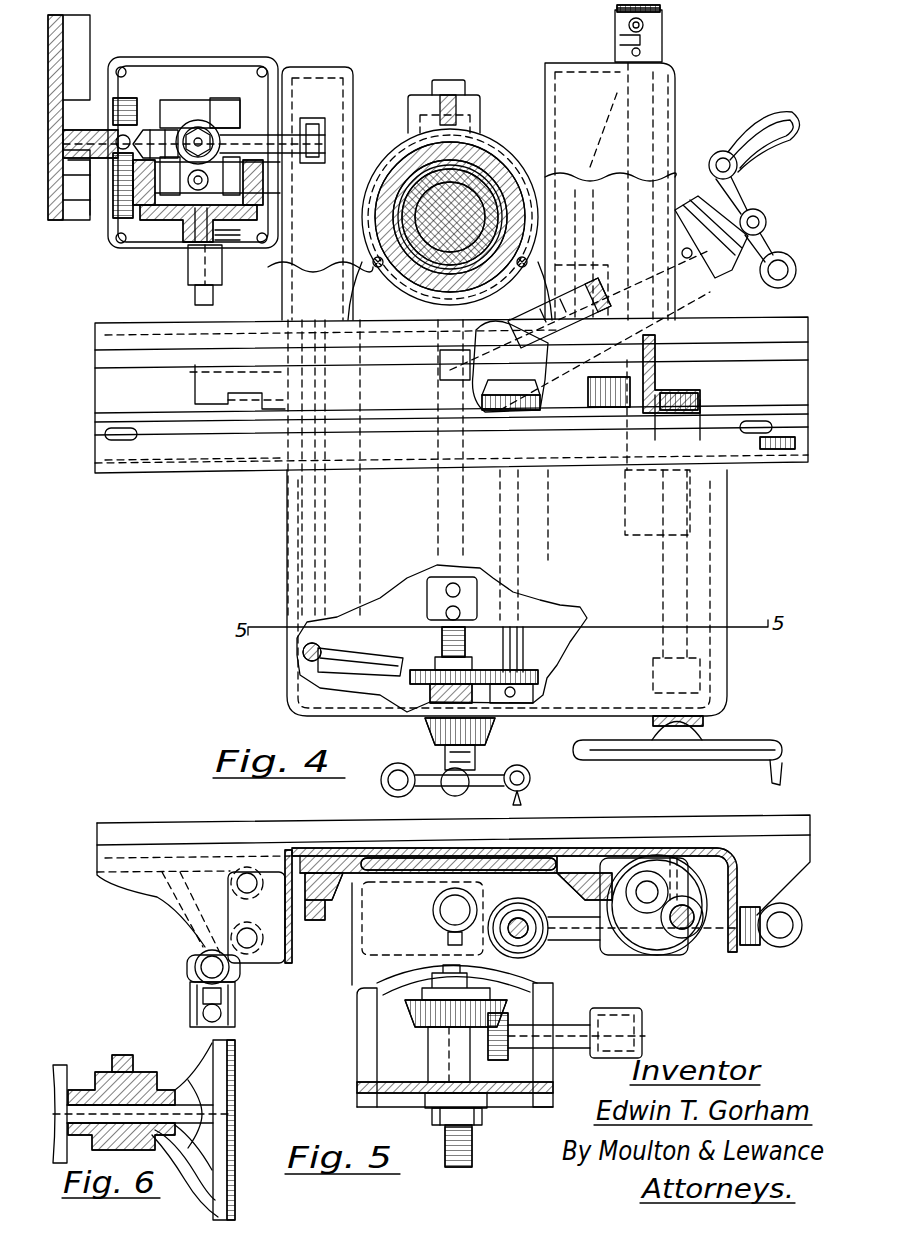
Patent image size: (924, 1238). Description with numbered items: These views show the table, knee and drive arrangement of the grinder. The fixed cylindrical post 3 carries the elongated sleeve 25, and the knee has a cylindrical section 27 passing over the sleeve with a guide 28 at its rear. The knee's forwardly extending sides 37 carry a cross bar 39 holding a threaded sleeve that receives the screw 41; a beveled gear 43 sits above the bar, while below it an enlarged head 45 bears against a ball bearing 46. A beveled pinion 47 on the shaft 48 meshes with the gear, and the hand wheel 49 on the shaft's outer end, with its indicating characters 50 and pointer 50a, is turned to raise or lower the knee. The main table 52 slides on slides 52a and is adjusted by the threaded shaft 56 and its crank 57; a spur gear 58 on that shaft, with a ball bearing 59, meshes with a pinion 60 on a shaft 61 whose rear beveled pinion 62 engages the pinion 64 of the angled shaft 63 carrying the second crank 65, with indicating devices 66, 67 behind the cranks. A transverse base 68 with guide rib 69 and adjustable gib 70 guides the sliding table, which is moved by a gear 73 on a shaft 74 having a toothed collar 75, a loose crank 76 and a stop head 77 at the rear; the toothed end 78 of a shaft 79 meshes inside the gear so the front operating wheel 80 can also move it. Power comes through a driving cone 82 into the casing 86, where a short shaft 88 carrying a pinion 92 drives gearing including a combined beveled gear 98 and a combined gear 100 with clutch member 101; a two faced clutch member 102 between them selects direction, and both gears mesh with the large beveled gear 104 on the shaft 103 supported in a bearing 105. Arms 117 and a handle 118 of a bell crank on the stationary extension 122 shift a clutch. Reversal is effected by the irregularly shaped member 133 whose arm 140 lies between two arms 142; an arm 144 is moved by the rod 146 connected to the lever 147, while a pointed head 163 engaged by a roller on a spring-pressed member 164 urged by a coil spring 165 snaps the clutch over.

In FIG. 4, the cylindrical standard or post 3 is at (420, 185).
In FIG. 4, the elongated cylindrical sleeve 25 is at (478, 157).
In FIG. 4, the cylindrical section of knee 27 is at (510, 160).
In FIG. 4, the guide 28 is at (475, 104).
In FIG. 5, the sides of knee 37 is at (360, 1015).
In FIG. 5, the cross bar 39 is at (445, 1058).
In FIG. 5, the screw 41 is at (473, 1160).
In FIG. 5, the beveled gear 43 is at (408, 1010).
In FIG. 5, the enlarged head 45 is at (482, 1122).
In FIG. 5, the ball bearing 46 is at (427, 1108).
In FIG. 5, the beveled pinion 47 is at (500, 1062).
In FIG. 5, the shaft 48 is at (612, 1040).
In FIG. 6, the shaft 48 is at (95, 1135).
In FIG. 6, the hand wheel 49 is at (215, 1091).
In FIG. 6, the indicating characters 50 is at (235, 1132).
In FIG. 6, the pointer 50a is at (195, 1195).
In FIG. 4, the main table 52 is at (707, 575).
In FIG. 5, the main table 52 is at (530, 848).
In FIG. 5, the slides 52a is at (572, 850).
In FIG. 4, the threaded shaft 56 is at (442, 648).
In FIG. 4, the operating crank or handle 57 is at (482, 773).
In FIG. 4, the spur gear 58 is at (450, 692).
In FIG. 4, the ball bearing 59 is at (381, 778).
In FIG. 4, the pinion 60 is at (540, 680).
In FIG. 4, the shaft 61 is at (523, 650).
In FIG. 5, the shaft 61 is at (570, 940).
In FIG. 4, the beveled pinion 62 is at (440, 372).
In FIG. 5, the beveled pinion 62 is at (510, 905).
In FIG. 4, the angled shaft 63 is at (542, 318).
In FIG. 4, the pinion 64 is at (511, 366).
In FIG. 4, the crank or handle 65 is at (765, 228).
In FIG. 5, the crank or handle 65 is at (780, 948).
In FIG. 4, the indicating device 66 is at (478, 722).
In FIG. 4, the indicating device 67 is at (720, 270).
In FIG. 4, the base 68 is at (263, 452).
In FIG. 5, the base 68 is at (282, 853).
In FIG. 4, the longitudinal guide rib 69 is at (138, 357).
In FIG. 4, the adjustable gib 70 is at (410, 427).
In FIG. 5, the adjustable gib 70 is at (258, 830).
In FIG. 4, the gear 73 is at (700, 390).
In FIG. 5, the gear 73 is at (655, 955).
In FIG. 4, the shaft 74 is at (733, 173).
In FIG. 5, the shaft 74 is at (652, 886).
In FIG. 4, the toothed collar 75 is at (665, 52).
In FIG. 4, the crank 76 is at (660, 32).
In FIG. 4, the head 77 is at (665, 8).
In FIG. 4, the toothed end 78 is at (680, 418).
In FIG. 4, the shaft 79 is at (665, 422).
In FIG. 5, the shaft 79 is at (690, 938).
In FIG. 4, the operating wheel 80 is at (677, 750).
In FIG. 5, the operating wheel 80 is at (620, 850).
In FIG. 4, the driving cone 82 is at (78, 47).
In FIG. 4, the casing or housing 86 is at (148, 248).
In FIG. 4, the short shaft 88 is at (167, 120).
In FIG. 4, the pinion 92 is at (125, 105).
In FIG. 4, the combined beveled gear 98 is at (137, 250).
In FIG. 4, the combined gear 100 is at (228, 247).
In FIG. 4, the clutch member 101 is at (240, 247).
In FIG. 4, the two faced clutch member 102 is at (242, 252).
In FIG. 4, the shaft 103 is at (195, 300).
In FIG. 4, the large beveled gear 104 is at (168, 250).
In FIG. 5, the bearing 105 is at (200, 973).
In FIG. 5, the arms of bell crank lever 117 is at (237, 997).
In FIG. 5, the handle 118 is at (232, 1027).
In FIG. 5, the stationary extension 122 is at (203, 1008).
In FIG. 4, the irregularly shaped member 133 is at (222, 110).
In FIG. 4, the arm 140 is at (205, 128).
In FIG. 4, the arms 142 is at (222, 120).
In FIG. 4, the arm 144 is at (308, 120).
In FIG. 4, the rod 146 is at (305, 645).
In FIG. 5, the rod 146 is at (290, 903).
In FIG. 4, the lever 147 is at (345, 668).
In FIG. 4, the head 163 is at (157, 135).
In FIG. 4, the member 164 is at (97, 187).
In FIG. 4, the coil spring 165 is at (80, 120).